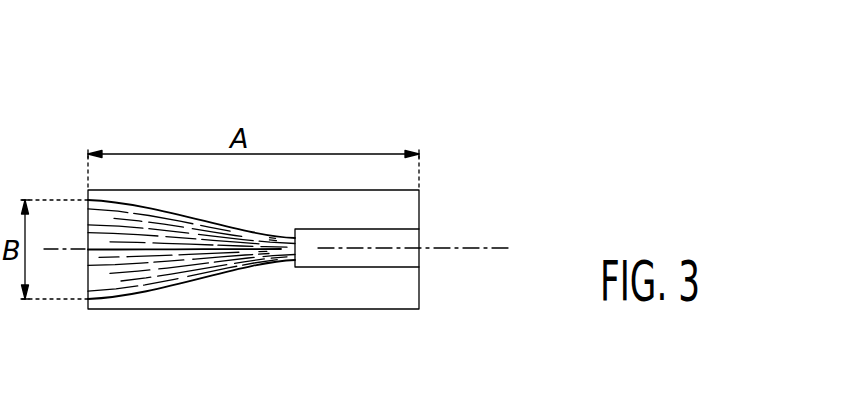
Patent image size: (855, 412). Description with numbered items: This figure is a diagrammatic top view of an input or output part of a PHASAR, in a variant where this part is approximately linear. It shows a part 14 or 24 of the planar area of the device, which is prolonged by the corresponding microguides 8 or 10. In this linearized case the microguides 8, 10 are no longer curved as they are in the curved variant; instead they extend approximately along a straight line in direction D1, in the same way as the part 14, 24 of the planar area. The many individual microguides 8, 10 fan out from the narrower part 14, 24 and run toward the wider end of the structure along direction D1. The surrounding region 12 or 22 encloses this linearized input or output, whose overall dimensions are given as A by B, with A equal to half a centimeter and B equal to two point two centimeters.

The microguides 8 is at (177, 284).
The microguides 10 is at (115, 277).
The ferrule / housing sleeve 12 is at (251, 199).
The ferrule / housing sleeve (alternate embodiment) 22 is at (192, 200).
The part of the planar area 14 is at (386, 299).
The part of the planar area 24 is at (357, 256).
The direction D1 is at (493, 247).